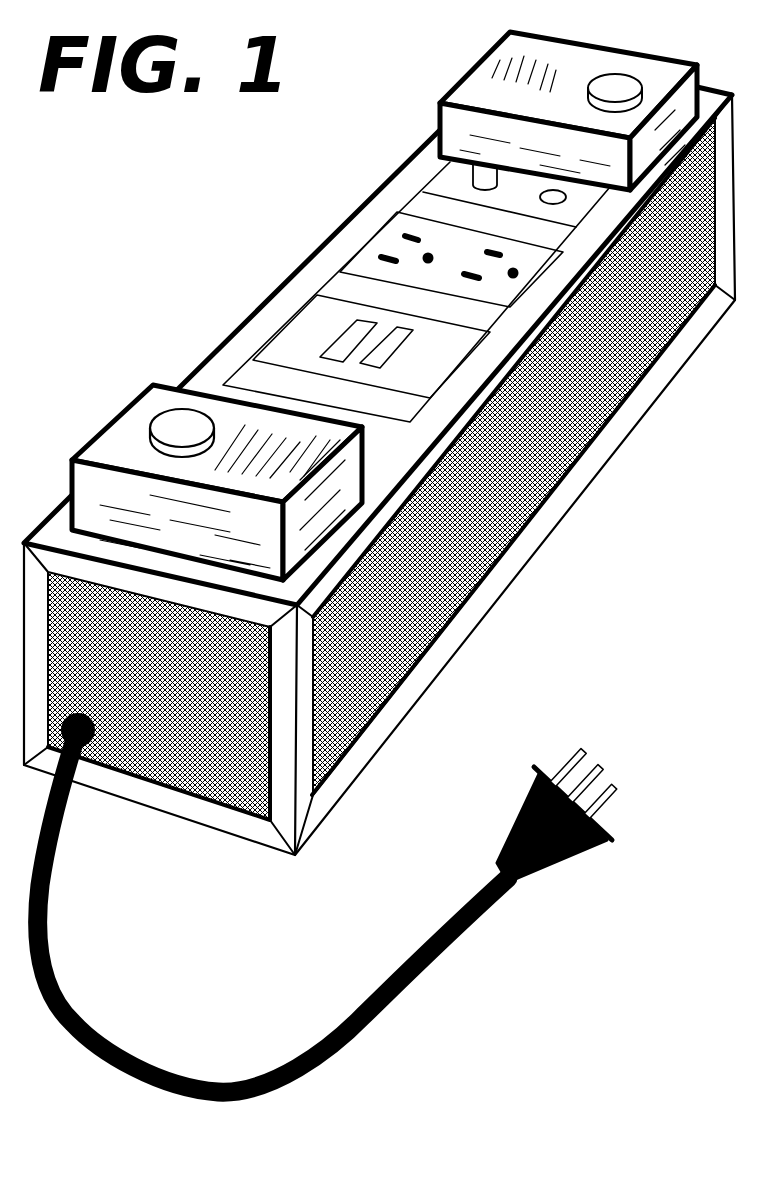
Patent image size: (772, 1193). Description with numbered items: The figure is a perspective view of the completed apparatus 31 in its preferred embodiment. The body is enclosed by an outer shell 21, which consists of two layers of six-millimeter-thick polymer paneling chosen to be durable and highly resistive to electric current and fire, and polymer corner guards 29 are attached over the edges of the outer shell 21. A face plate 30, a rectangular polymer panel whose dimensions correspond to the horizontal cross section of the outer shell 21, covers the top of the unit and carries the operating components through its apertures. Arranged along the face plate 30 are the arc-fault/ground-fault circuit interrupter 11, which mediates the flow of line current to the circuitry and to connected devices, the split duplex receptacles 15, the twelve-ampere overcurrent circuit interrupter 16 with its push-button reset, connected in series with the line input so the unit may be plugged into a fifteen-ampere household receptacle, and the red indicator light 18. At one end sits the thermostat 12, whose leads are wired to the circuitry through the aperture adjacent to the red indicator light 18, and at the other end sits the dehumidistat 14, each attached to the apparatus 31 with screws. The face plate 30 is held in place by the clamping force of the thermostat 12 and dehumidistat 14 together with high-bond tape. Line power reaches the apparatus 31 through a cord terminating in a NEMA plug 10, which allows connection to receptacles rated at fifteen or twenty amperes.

The NEMA 5-15P plug 10 is at (526, 805).
The arc-fault/ground-fault circuit interrupter 11 is at (258, 352).
The thermostat 12 is at (627, 51).
The dehumidistat 14 is at (132, 410).
The split duplex receptacles 15 is at (383, 227).
The 12-ampere overcurrent circuit interrupter 16 is at (452, 176).
The red indicator light 18 is at (568, 198).
The outer shell 21 is at (528, 527).
The polymer corner guards 29 is at (482, 617).
The face plate 30 is at (293, 273).
The apparatus 31 is at (600, 540).